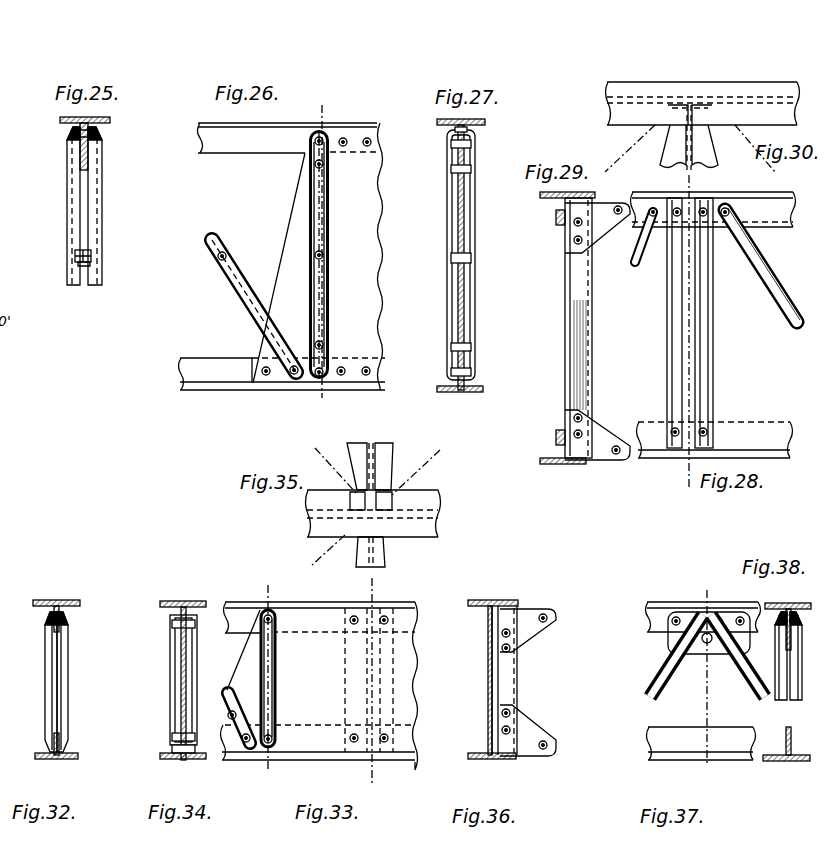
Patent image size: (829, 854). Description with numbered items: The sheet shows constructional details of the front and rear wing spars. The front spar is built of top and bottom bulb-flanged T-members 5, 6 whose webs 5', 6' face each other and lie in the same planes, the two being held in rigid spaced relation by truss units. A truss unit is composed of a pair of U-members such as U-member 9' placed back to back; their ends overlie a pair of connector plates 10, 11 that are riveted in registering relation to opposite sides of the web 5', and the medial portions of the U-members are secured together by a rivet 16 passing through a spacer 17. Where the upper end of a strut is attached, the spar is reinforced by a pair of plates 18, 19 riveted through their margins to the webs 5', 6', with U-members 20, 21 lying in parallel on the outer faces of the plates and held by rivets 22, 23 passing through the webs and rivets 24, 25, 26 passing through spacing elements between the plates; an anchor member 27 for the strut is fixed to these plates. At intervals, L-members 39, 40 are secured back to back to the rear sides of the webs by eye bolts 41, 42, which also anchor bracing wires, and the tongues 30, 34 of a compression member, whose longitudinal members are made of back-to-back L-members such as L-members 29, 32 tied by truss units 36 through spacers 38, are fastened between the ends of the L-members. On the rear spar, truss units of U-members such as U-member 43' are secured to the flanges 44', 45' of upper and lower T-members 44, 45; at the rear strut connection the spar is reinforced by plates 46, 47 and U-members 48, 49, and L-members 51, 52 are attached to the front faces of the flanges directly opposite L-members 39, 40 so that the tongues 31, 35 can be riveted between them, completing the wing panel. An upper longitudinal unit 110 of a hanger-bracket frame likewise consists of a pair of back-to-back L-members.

In FIG. 27, the top bulb-flanged T-member 5 is at (474, 114).
In FIG. 29, the top bulb-flanged T-member 5 is at (573, 189).
In FIG. 30, the top bulb-flanged T-member 5 is at (693, 103).
In FIG. 25, the web of T-member 5 5' is at (99, 111).
In FIG. 26, the web of T-member 5 5' is at (288, 152).
In FIG. 28, the web of T-member 5 5' is at (713, 216).
In FIG. 27, the bottom bulb-flanged T-member 6 is at (460, 398).
In FIG. 29, the bottom bulb-flanged T-member 6 is at (563, 472).
In FIG. 26, the web of T-member 6 6' is at (282, 271).
In FIG. 28, the web of T-member 6 6' is at (715, 429).
In FIG. 25, the U-member 9' is at (61, 206).
In FIG. 25, the connector plate 10 is at (79, 131).
In FIG. 25, the connector plate 11 is at (91, 131).
In FIG. 25, the rivet 16 is at (91, 256).
In FIG. 25, the spacer 17 is at (86, 265).
In FIG. 26, the reinforcing plate 18 is at (358, 207).
In FIG. 27, the reinforcing plate 18 is at (450, 132).
In FIG. 27, the reinforcing plate 19 is at (468, 133).
In FIG. 26, the U-member 20 is at (309, 206).
In FIG. 27, the U-member 20 is at (447, 220).
In FIG. 27, the U-member 21 is at (475, 220).
In FIG. 27, the rivet 22 is at (472, 145).
In FIG. 27, the rivet 23 is at (476, 372).
In FIG. 27, the rivet 24 is at (476, 168).
In FIG. 27, the rivet 25 is at (475, 256).
In FIG. 27, the rivet 26 is at (452, 346).
In FIG. 26, the anchor member 27 is at (322, 105).
In FIG. 35, the anchor member 27 is at (330, 453).
In FIG. 28, the L-member 29 is at (682, 181).
In FIG. 29, the projecting tongue 30 is at (602, 222).
In FIG. 28, the projecting tongue 30 is at (697, 228).
In FIG. 35, the projecting tongue 31 is at (393, 463).
In FIG. 36, the projecting tongue 31 is at (532, 632).
In FIG. 35, the L-member 32 is at (389, 452).
In FIG. 29, the projecting tongue 34 is at (596, 430).
In FIG. 28, the projecting tongue 34 is at (678, 432).
In FIG. 33, the projecting tongue 34 is at (251, 676).
In FIG. 35, the projecting tongue 35 is at (355, 452).
In FIG. 36, the projecting tongue 35 is at (525, 733).
In FIG. 33, the truss unit 36 is at (372, 582).
In FIG. 37, the spacer 38 is at (706, 679).
In FIG. 38, the spacer 38 is at (784, 762).
In FIG. 28, the L-member 39 is at (675, 280).
In FIG. 29, the L-member 40 is at (580, 346).
In FIG. 28, the L-member 40 is at (706, 310).
In FIG. 29, the eye bolt 41 is at (558, 226).
In FIG. 28, the eye bolt 41 is at (680, 222).
In FIG. 29, the eye bolt 42 is at (556, 438).
In FIG. 28, the eye bolt 42 is at (706, 431).
In FIG. 32, the U-member 43' is at (37, 682).
In FIG. 35, the upper T-member 44 is at (384, 513).
In FIG. 32, the upper T-member 44 is at (57, 592).
In FIG. 36, the upper T-member 44 is at (493, 589).
In FIG. 37, the upper T-member 44 is at (703, 602).
In FIG. 38, the upper T-member 44 is at (788, 591).
In FIG. 36, the flange of T-member 44 44' is at (469, 680).
In FIG. 32, the lower T-member 45 is at (56, 767).
In FIG. 36, the lower T-member 45 is at (492, 767).
In FIG. 36, the flange of T-member 45 45' is at (466, 719).
In FIG. 34, the reinforcing plate 46 is at (172, 614).
In FIG. 33, the reinforcing plate 46 is at (316, 671).
In FIG. 34, the reinforcing plate 47 is at (201, 604).
In FIG. 34, the U-member 48 is at (172, 660).
In FIG. 34, the U-member 49 is at (198, 690).
In FIG. 35, the L-member 51 is at (328, 550).
In FIG. 36, the L-member 51 is at (517, 675).
In FIG. 35, the L-member 52 is at (394, 490).
In FIG. 35, the upper longitudinal unit 110 is at (386, 554).